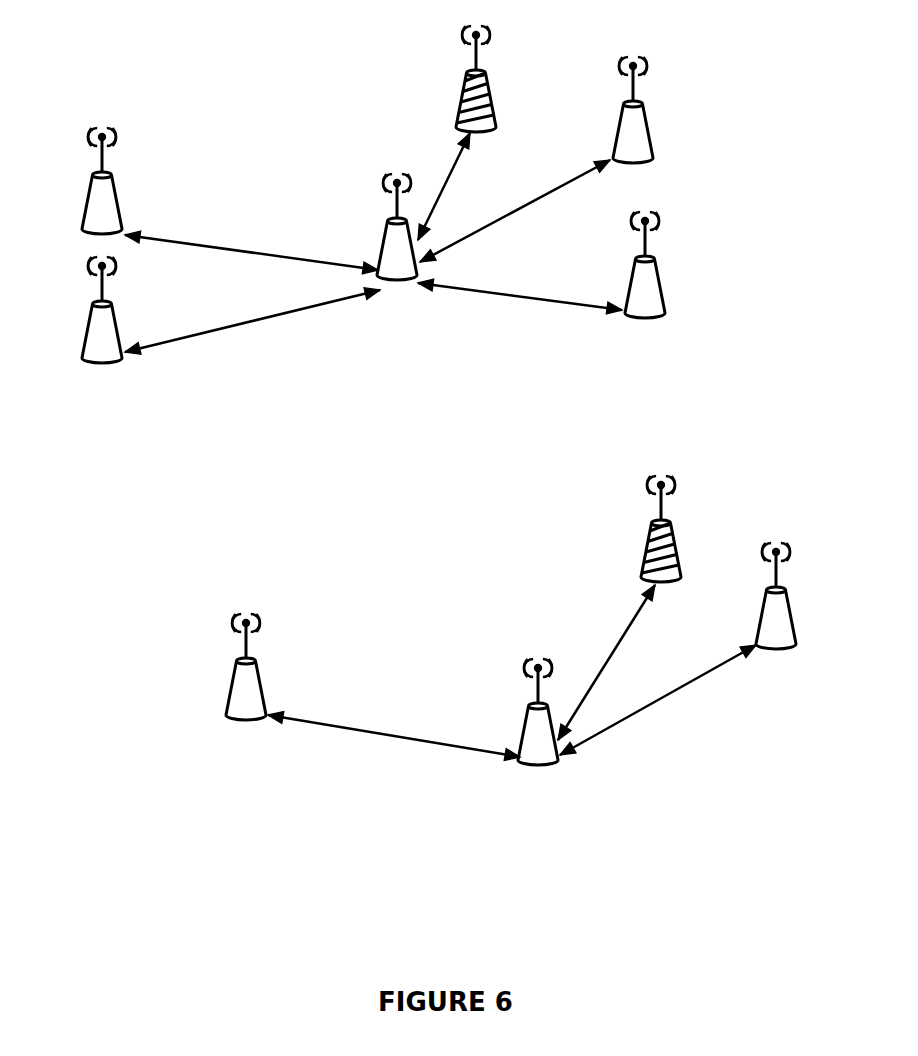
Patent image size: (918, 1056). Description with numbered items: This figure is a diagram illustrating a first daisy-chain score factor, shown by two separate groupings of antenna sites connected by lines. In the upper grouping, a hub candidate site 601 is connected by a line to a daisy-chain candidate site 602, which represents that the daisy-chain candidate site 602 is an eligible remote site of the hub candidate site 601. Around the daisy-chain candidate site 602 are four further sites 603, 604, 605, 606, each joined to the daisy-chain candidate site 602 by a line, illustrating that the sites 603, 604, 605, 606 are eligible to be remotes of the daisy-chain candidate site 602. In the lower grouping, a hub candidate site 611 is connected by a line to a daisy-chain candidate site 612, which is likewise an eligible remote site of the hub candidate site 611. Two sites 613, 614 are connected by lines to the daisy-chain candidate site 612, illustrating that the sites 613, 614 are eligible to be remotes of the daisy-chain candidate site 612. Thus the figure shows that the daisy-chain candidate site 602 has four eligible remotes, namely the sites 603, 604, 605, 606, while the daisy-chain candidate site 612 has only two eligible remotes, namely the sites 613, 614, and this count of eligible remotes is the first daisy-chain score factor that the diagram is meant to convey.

The hub candidate site 601 is at (490, 100).
The daisy-chain candidate site 602 is at (385, 232).
The site 603 is at (88, 196).
The site 604 is at (88, 323).
The site 605 is at (652, 132).
The site 606 is at (662, 286).
The hub candidate site 611 is at (677, 548).
The daisy-chain candidate site 612 is at (526, 717).
The site 613 is at (228, 681).
The site 614 is at (795, 616).